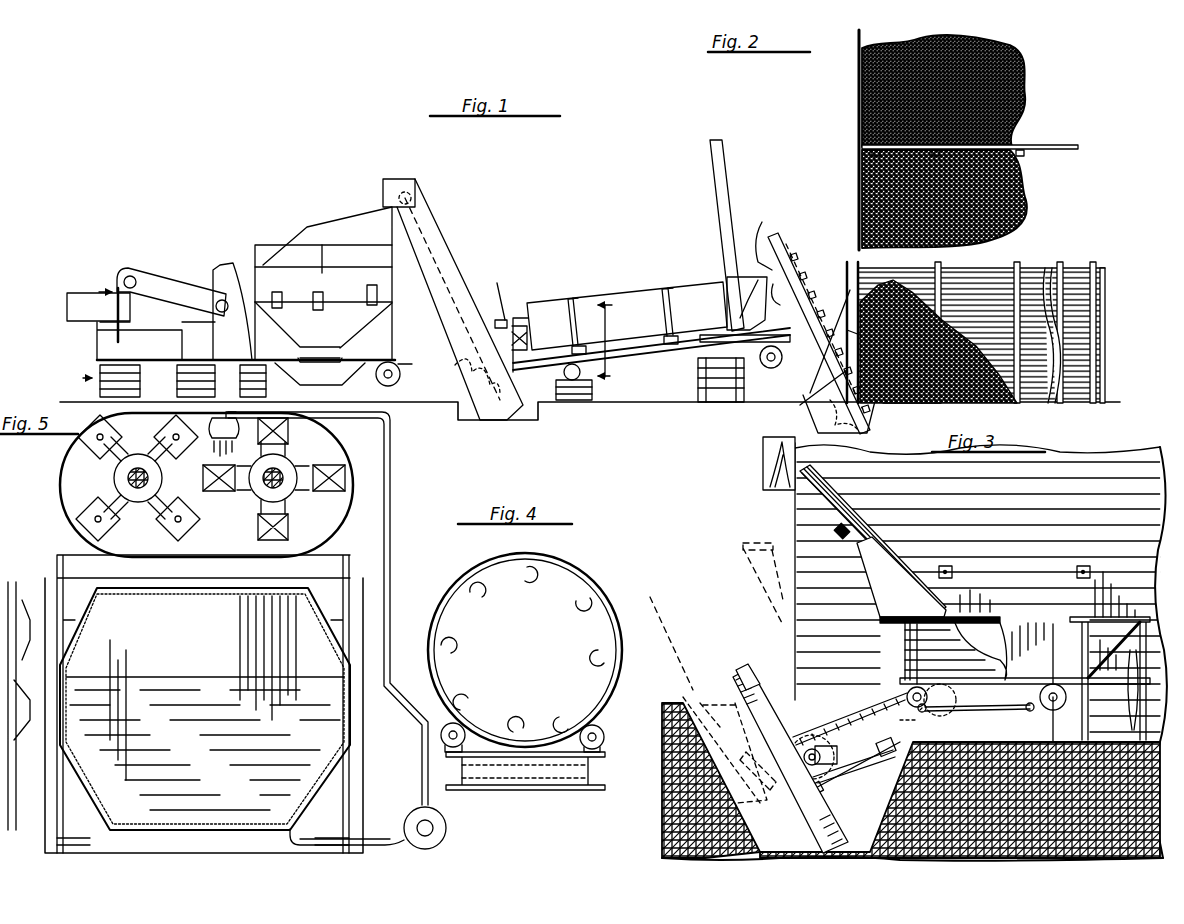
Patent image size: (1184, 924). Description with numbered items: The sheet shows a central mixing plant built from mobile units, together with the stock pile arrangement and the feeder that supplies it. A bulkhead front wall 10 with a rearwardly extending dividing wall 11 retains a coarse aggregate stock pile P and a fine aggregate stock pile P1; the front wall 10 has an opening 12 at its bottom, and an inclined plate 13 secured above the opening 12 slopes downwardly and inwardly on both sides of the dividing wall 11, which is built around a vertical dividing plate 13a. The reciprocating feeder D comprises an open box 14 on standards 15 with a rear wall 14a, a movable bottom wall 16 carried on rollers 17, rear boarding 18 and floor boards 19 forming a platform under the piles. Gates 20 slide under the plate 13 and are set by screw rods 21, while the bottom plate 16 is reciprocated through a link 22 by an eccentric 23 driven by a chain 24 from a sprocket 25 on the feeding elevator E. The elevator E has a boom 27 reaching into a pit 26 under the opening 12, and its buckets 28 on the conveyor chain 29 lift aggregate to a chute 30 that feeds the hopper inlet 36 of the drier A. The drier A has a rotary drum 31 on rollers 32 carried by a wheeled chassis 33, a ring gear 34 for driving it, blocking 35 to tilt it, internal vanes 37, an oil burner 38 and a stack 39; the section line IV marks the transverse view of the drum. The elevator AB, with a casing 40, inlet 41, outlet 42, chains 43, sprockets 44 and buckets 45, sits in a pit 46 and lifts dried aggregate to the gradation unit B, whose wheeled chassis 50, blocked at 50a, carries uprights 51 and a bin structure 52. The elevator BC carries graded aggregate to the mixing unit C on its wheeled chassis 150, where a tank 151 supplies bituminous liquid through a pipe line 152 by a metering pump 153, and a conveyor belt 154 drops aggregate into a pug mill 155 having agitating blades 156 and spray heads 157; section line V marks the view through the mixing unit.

In FIG. 1, the bulkhead front wall 10 is at (850, 262).
In FIG. 2, the bulkhead front wall 10 is at (862, 33).
In FIG. 3, the bulkhead front wall 10 is at (762, 450).
In FIG. 1, the dividing wall 11 is at (1038, 268).
In FIG. 2, the dividing wall 11 is at (1040, 146).
In FIG. 3, the dividing wall 11 is at (1118, 456).
In FIG. 1, the opening 12 is at (835, 371).
In FIG. 3, the opening 12 is at (790, 512).
In FIG. 1, the inclined plate 13 is at (832, 362).
In FIG. 2, the inclined plate 13 is at (858, 198).
In FIG. 3, the inclined plate 13 is at (822, 492).
In FIG. 3, the dividing plate 13a is at (1095, 600).
In FIG. 1, the box 14 is at (930, 405).
In FIG. 2, the box 14 is at (858, 120).
In FIG. 3, the box 14 is at (950, 612).
In FIG. 3, the rear wall 14a is at (1130, 650).
In FIG. 1, the standards 15 is at (936, 412).
In FIG. 3, the standards 15 is at (920, 655).
In FIG. 3, the movable bottom wall 16 is at (1005, 680).
In FIG. 3, the rollers 17 is at (906, 692).
In FIG. 3, the boarding 18 is at (1163, 690).
In FIG. 1, the floor boards 19 is at (895, 410).
In FIG. 3, the floor boards 19 is at (972, 617).
In FIG. 2, the gates 20 is at (858, 144).
In FIG. 3, the gates 20 is at (898, 566).
In FIG. 3, the screw rods 21 is at (838, 518).
In FIG. 3, the link 22 is at (998, 710).
In FIG. 3, the eccentric 23 is at (950, 712).
In FIG. 3, the chain 24 is at (898, 718).
In FIG. 3, the sprocket 25 is at (825, 740).
In FIG. 1, the pit 26 is at (812, 412).
In FIG. 3, the pit 26 is at (660, 812).
In FIG. 1, the boom 27 is at (830, 419).
In FIG. 3, the boom 27 is at (760, 727).
In FIG. 1, the buckets 28 is at (796, 230).
In FIG. 3, the buckets 28 is at (690, 678).
In FIG. 1, the conveyor chain or band 29 is at (802, 264).
In FIG. 3, the conveyor chain or band 29 is at (663, 618).
In FIG. 1, the chute 30 is at (762, 232).
In FIG. 1, the rotary drum 31 is at (551, 300).
In FIG. 4, the rotary drum 31 is at (602, 586).
In FIG. 4, the rollers 32 is at (446, 724).
In FIG. 1, the wheeled chassis 33 is at (666, 366).
In FIG. 4, the wheeled chassis 33 is at (606, 767).
In FIG. 1, the ring gear 34 is at (660, 312).
In FIG. 1, the blocking 35 is at (572, 404).
In FIG. 1, the hopper inlet 36 is at (768, 302).
In FIG. 4, the internal baffles or vanes 37 is at (476, 598).
In FIG. 1, the oil burner 38 is at (501, 296).
In FIG. 1, the stack 39 is at (712, 182).
In FIG. 1, the casing 40 is at (470, 279).
In FIG. 1, the inlet 41 is at (505, 404).
In FIG. 1, the outlet 42 is at (392, 198).
In FIG. 1, the endless driving chains or belts 43 is at (430, 280).
In FIG. 1, the sprockets 44 is at (412, 196).
In FIG. 1, the buckets 45 is at (462, 368).
In FIG. 1, the pit 46 is at (540, 421).
In FIG. 1, the wheeled chassis 50 is at (367, 374).
In FIG. 1, the blocking 50a is at (246, 394).
In FIG. 1, the uprights 51 is at (252, 337).
In FIG. 1, the bin structure 52 is at (356, 316).
In FIG. 1, the wheeled chassis 150 is at (118, 360).
In FIG. 5, the wheeled chassis 150 is at (352, 815).
In FIG. 5, the tank 151 is at (340, 760).
In FIG. 5, the pipe line 152 is at (392, 585).
In FIG. 5, the metering pump 153 is at (447, 822).
In FIG. 1, the conveyor belt 154 is at (165, 290).
In FIG. 1, the pug mill 155 is at (67, 307).
In FIG. 5, the pug mill 155 is at (62, 495).
In FIG. 5, the agitating blades 156 is at (200, 518).
In FIG. 5, the spray heads 157 is at (212, 452).
In FIG. 1, the mobile rotary drum drier A is at (627, 288).
In FIG. 4, the mobile rotary drum drier A is at (539, 641).
In FIG. 1, the mobile gradation unit B is at (279, 243).
In FIG. 1, the mobile mixing unit C is at (78, 290).
In FIG. 1, the reciprocating feeder D is at (912, 412).
In FIG. 3, the reciprocating feeder D is at (1022, 632).
In FIG. 1, the feeding elevator E is at (808, 282).
In FIG. 3, the feeding elevator E is at (742, 675).
In FIG. 2, the coarse aggregate stock pile P is at (1022, 72).
In FIG. 1, the fine aggregate stock pile P1 is at (962, 335).
In FIG. 2, the fine aggregate stock pile P1 is at (1026, 192).
In FIG. 1, the elevator AB is at (455, 254).
In FIG. 1, the elevator BC is at (229, 262).
In FIG. 1, the section line V— V is at (91, 330).
In FIG. 1, the section line IV— IV is at (616, 336).